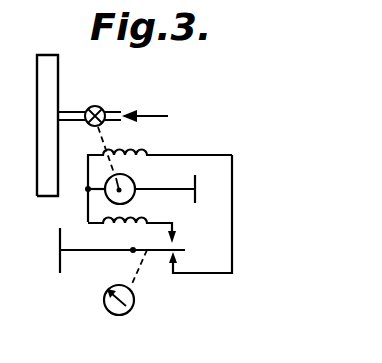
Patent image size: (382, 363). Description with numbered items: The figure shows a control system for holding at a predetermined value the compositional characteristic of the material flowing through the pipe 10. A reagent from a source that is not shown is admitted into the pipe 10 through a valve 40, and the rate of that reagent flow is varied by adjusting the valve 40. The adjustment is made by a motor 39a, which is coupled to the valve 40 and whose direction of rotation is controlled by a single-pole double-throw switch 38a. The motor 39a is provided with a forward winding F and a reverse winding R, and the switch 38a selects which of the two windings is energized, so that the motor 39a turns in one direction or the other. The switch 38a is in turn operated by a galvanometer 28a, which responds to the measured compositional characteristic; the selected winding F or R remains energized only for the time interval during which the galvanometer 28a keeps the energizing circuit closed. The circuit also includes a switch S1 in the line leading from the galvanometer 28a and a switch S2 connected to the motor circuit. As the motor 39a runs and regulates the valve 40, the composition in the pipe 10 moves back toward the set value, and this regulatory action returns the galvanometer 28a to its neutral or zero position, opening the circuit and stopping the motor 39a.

The pipe 10 is at (64, 62).
The valve 40 is at (106, 82).
The forward winding F is at (137, 156).
The motor 39a is at (134, 181).
The switch S2 is at (232, 188).
The reverse winding R is at (117, 224).
The switch S1 is at (58, 255).
The single-pole double-throw switch 38a is at (175, 243).
The galvanometer 28a is at (135, 302).